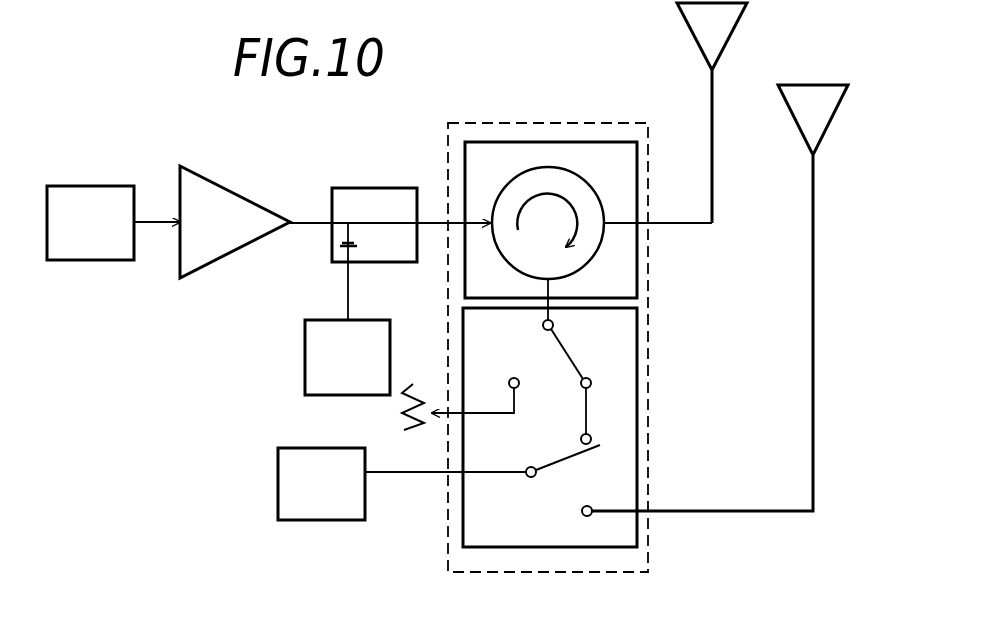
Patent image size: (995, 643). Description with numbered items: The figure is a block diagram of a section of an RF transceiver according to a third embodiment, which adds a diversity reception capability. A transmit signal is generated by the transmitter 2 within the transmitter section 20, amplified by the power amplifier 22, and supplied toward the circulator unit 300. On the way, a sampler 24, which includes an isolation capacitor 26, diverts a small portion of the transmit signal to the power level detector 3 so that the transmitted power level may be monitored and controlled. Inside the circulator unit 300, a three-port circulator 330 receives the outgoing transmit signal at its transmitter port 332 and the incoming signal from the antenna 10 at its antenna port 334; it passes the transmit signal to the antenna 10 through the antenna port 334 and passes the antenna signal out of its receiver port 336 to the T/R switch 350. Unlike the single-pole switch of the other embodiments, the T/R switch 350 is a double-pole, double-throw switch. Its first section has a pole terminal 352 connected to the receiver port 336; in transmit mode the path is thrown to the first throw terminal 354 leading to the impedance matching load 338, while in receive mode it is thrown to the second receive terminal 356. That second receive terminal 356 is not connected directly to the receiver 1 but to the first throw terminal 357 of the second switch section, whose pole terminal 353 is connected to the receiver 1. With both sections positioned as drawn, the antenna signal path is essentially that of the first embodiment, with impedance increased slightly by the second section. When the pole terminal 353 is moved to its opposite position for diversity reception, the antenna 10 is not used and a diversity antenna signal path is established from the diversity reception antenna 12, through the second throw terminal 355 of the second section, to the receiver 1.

The receiver 1 is at (278, 480).
The transmitter 2 is at (96, 260).
The power level detector 3 is at (305, 333).
The antenna 10 is at (705, 68).
The diversity reception antenna 12 is at (720, 298).
The transmitter section 20 is at (312, 187).
The power amplifier 22 is at (200, 278).
The sampler 24 is at (381, 262).
The isolation capacitor 26 is at (343, 245).
The circulator unit 300 is at (617, 121).
The three-port circulator 330 is at (637, 172).
The transmitter port 332 is at (462, 230).
The antenna port 334 is at (666, 208).
The receiver port 336 is at (556, 288).
The impedance matching load 338 is at (399, 413).
The T/R switch 350 is at (637, 343).
The pole terminal 352 is at (540, 326).
The pole terminal 353 is at (520, 475).
The first throw terminal 354 is at (500, 378).
The second throw terminal 355 is at (596, 507).
The second receive terminal 356 is at (600, 381).
The first throw terminal 357 is at (598, 437).